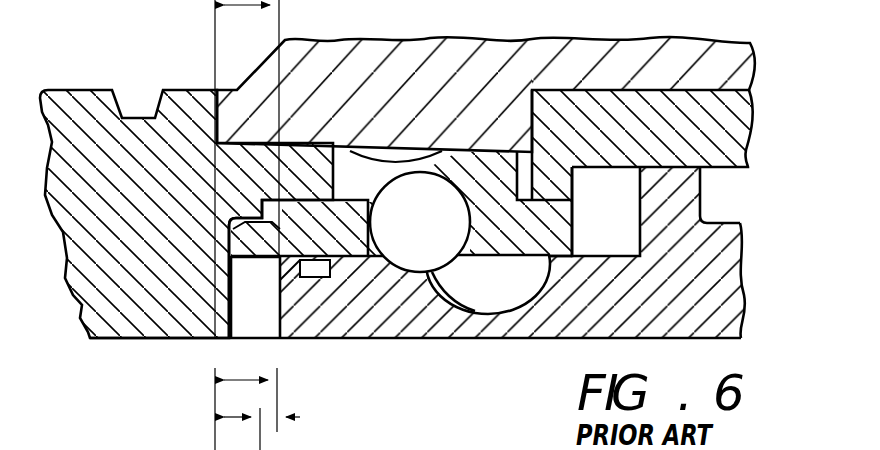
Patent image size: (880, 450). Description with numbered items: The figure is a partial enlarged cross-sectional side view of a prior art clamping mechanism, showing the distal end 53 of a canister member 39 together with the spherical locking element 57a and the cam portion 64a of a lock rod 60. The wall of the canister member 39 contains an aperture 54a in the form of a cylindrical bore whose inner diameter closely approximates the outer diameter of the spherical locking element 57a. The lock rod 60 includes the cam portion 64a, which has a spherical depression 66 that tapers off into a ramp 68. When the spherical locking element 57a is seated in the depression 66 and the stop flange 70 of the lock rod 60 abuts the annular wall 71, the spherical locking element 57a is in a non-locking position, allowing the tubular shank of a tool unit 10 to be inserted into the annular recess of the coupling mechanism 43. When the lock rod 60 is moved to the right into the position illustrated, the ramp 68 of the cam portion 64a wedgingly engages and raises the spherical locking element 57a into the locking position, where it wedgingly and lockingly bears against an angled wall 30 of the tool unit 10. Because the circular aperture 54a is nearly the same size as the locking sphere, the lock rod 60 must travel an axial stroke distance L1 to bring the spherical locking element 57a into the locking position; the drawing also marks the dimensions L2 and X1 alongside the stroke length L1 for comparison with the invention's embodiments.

The tool unit 10 is at (148, 265).
The angled wall 30 is at (447, 181).
The canister member 39 is at (316, 236).
The coupling mechanism 43 is at (440, 102).
The distal end 53 is at (242, 242).
The aperture 54a is at (367, 200).
The spherical locking element 57a is at (446, 238).
The lock rod 60 is at (683, 313).
The cam portion 64a is at (435, 303).
The spherical depression 66 is at (487, 304).
The ramp 68 is at (378, 257).
The stop flange 70 is at (675, 197).
The annular wall 71 is at (560, 184).
The lock rod stroke length L1 is at (237, 6).
The dimension L2 is at (236, 420).
The dimension X1 is at (268, 420).